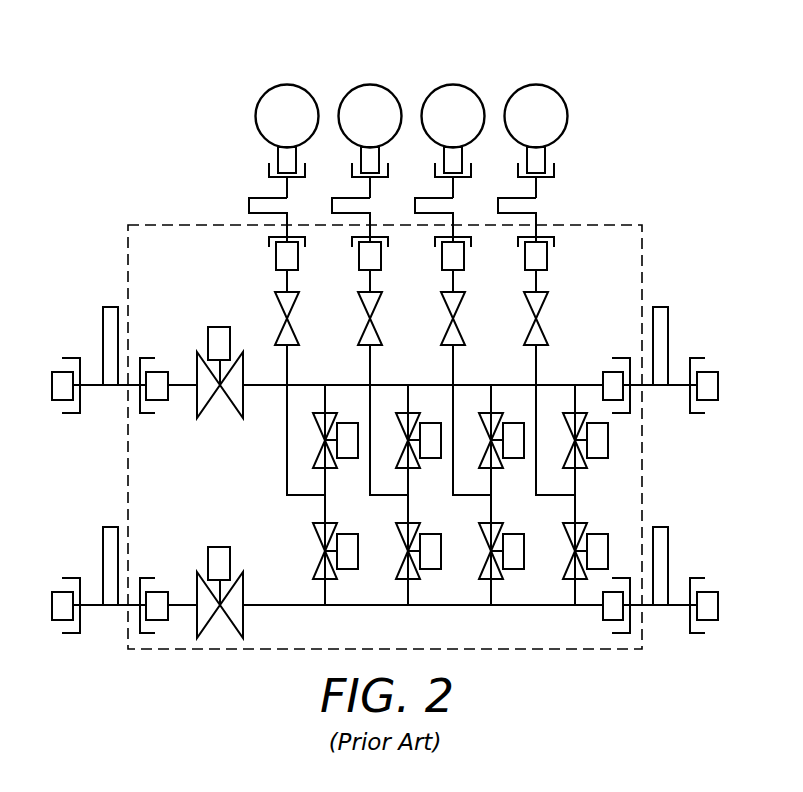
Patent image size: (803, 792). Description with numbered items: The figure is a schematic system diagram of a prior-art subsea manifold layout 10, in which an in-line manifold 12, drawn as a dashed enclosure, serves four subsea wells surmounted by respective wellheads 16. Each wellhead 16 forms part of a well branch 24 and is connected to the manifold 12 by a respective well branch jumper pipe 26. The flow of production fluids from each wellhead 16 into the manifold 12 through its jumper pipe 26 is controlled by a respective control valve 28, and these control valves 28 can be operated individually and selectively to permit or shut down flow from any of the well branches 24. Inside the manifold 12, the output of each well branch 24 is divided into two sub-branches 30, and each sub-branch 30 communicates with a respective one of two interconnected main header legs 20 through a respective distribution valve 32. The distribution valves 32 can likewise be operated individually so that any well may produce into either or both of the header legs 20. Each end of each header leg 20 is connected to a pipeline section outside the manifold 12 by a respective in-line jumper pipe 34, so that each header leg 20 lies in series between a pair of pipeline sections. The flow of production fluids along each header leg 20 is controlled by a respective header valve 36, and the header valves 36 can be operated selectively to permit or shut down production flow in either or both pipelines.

The subsea manifold layout 10 is at (107, 124).
The in-line manifold 12 is at (127, 240).
The wellhead 16 is at (412, 88).
The main header leg 20 is at (563, 384).
The well branch 24 is at (239, 136).
The well branch jumper pipe 26 is at (249, 207).
The control valve 28 is at (276, 305).
The sub-branch 30 is at (575, 402).
The distribution valve 32 is at (586, 464).
The in-line jumper pipe 34 is at (103, 322).
The header valve 36 is at (200, 414).